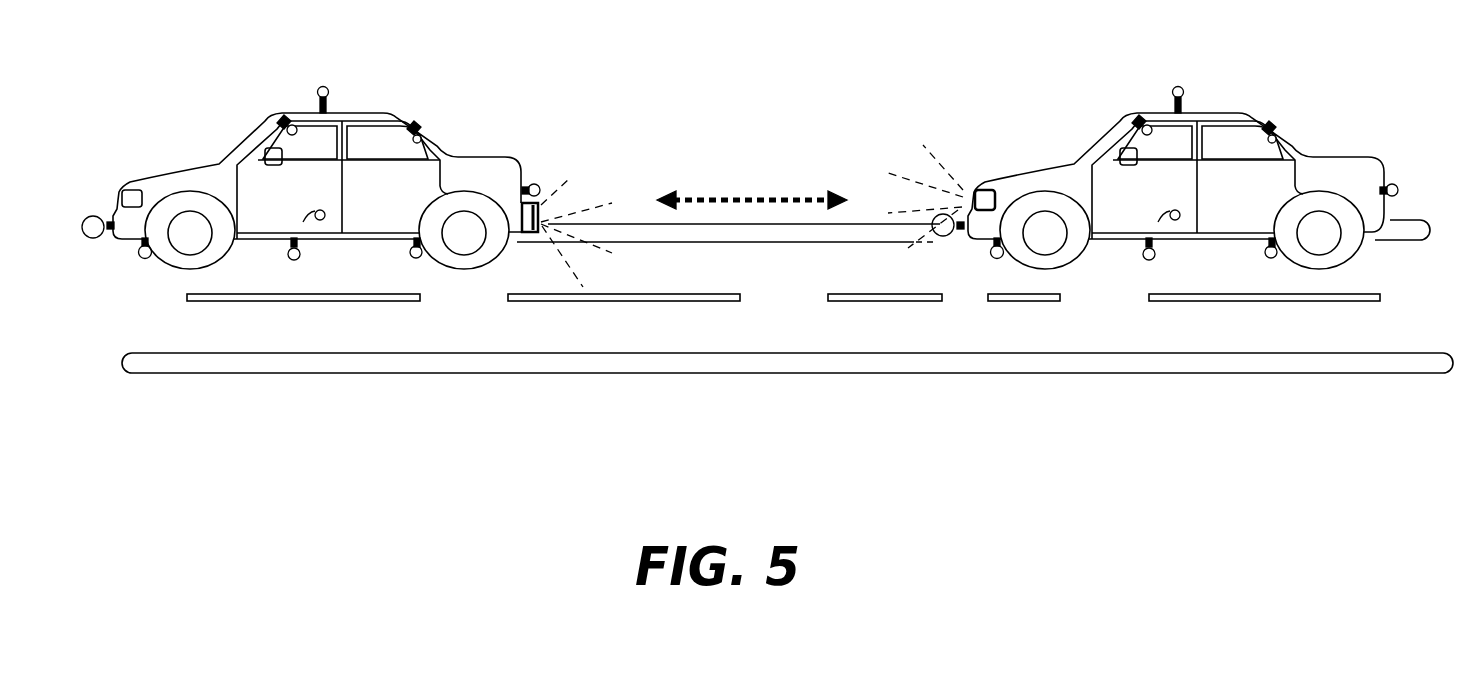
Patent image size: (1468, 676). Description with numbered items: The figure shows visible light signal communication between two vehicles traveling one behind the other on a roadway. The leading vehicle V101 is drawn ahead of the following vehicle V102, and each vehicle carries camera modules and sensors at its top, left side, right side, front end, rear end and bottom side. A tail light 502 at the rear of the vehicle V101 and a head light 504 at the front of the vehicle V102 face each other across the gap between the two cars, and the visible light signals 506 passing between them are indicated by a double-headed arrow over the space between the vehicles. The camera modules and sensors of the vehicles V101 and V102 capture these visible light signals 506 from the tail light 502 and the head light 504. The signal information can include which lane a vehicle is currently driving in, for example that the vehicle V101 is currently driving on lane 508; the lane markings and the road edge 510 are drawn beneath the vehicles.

The vehicle V101 is at (431, 80).
The vehicle V102 is at (1285, 76).
The tail light 502 is at (570, 178).
The head light 504 is at (984, 188).
The visible light signals 506 is at (750, 197).
The lane 508 is at (1405, 253).
The road surface 510 is at (787, 341).